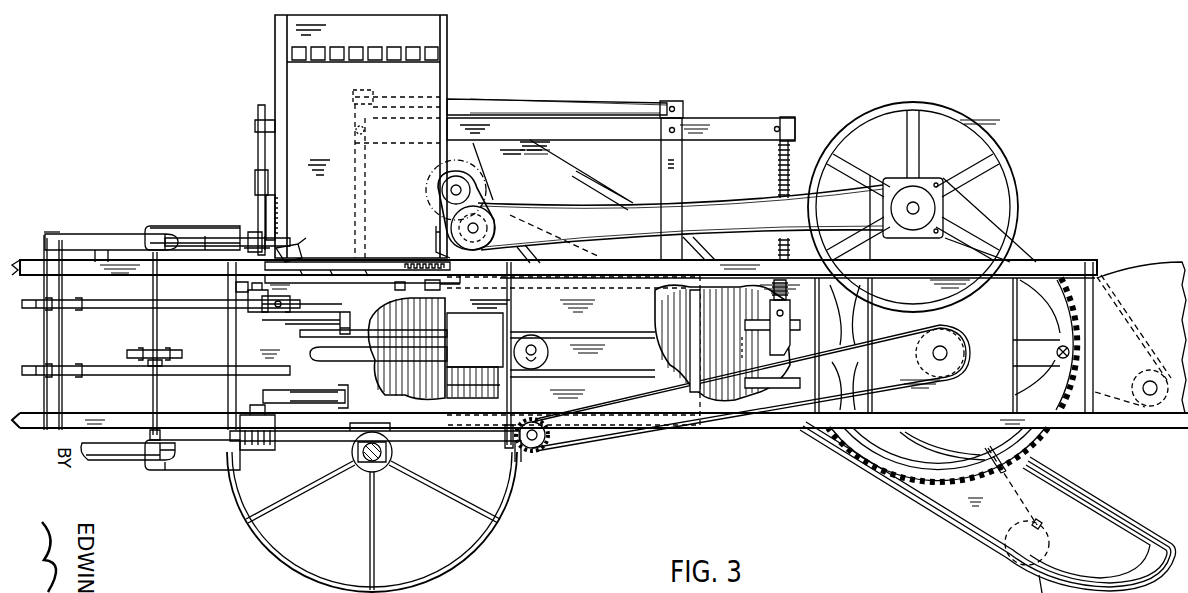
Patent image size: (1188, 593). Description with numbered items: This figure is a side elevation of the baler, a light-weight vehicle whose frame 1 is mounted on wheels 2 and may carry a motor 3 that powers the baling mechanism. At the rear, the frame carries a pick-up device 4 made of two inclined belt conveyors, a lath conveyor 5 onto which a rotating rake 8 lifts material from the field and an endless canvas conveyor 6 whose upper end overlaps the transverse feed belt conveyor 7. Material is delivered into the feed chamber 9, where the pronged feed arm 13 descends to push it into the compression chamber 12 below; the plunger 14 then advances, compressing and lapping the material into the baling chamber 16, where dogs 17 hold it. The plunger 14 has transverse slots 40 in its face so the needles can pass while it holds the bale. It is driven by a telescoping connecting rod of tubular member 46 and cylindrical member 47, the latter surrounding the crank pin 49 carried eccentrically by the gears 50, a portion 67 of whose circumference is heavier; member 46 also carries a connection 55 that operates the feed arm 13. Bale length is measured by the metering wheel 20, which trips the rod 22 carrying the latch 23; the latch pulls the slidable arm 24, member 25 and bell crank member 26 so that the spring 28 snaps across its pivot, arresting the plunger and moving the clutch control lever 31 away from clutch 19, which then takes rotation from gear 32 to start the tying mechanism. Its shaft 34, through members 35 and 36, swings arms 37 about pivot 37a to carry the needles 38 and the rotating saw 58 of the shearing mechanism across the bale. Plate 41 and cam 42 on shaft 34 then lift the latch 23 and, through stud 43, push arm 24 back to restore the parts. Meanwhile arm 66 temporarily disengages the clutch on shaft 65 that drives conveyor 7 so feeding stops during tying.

The frame 1 is at (22, 413).
The wheels 2 is at (491, 537).
The motor 3 is at (1140, 337).
The pick-up device 4 is at (988, 506).
The inclined conveyor 5 is at (1006, 507).
The inclined conveyor 6 is at (495, 193).
The feed belt conveyor 7 is at (621, 203).
The rotating rake 8 is at (1036, 584).
The feed chamber 9 is at (361, 136).
The compression chamber 12 is at (406, 348).
The feed arm 13 is at (352, 110).
The plunger 14 is at (475, 355).
The baling chamber 16 is at (140, 332).
The dogs 17 is at (296, 290).
The clutch 19 is at (505, 443).
The metering wheel 20 is at (138, 352).
The rod 22 is at (95, 255).
The latch 23 is at (300, 250).
The slidable arm 24 is at (325, 262).
The member 25 is at (398, 290).
The bell crank member 26 is at (425, 284).
The spring 28 is at (428, 262).
The clutch control lever 31 is at (518, 312).
The gear 32 is at (527, 446).
The shaft 34 is at (248, 297).
The member 35 is at (252, 232).
The member 36 is at (176, 226).
The arms 37 is at (44, 242).
The pivot 37a is at (170, 232).
The needles 38 is at (96, 285).
The transverse slots 40 is at (492, 379).
The plate 41 is at (236, 240).
The cam 42 is at (236, 285).
The stud 43 is at (278, 305).
The tubular member 46 is at (714, 345).
The cylindrical member 47 is at (753, 337).
The crank pin 49 is at (1057, 350).
The gears 50 is at (1036, 252).
The connection 55 is at (770, 311).
The saw 58 is at (262, 210).
The shaft 65 is at (496, 229).
The arm 66 is at (436, 232).
The portion 67 is at (1024, 468).